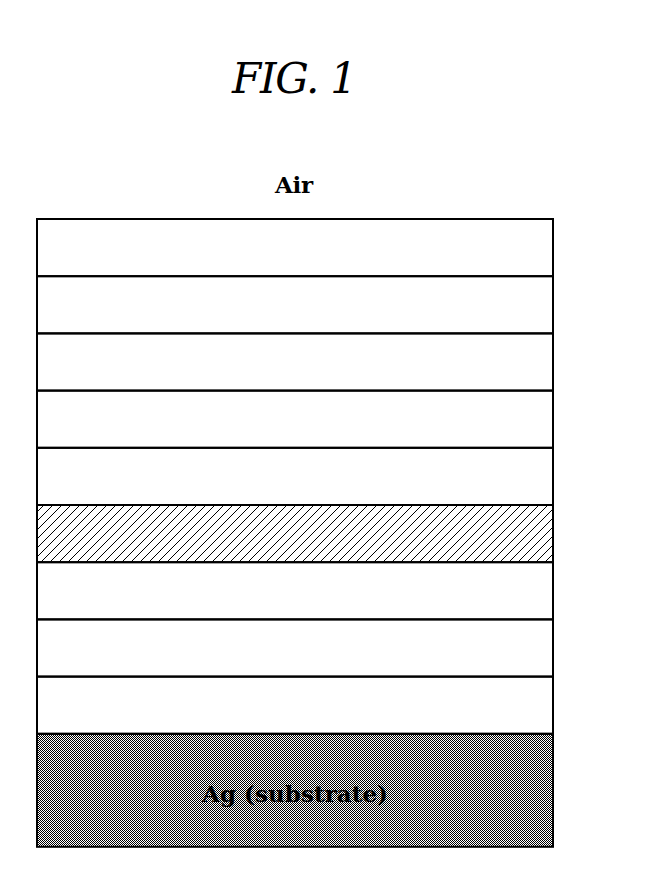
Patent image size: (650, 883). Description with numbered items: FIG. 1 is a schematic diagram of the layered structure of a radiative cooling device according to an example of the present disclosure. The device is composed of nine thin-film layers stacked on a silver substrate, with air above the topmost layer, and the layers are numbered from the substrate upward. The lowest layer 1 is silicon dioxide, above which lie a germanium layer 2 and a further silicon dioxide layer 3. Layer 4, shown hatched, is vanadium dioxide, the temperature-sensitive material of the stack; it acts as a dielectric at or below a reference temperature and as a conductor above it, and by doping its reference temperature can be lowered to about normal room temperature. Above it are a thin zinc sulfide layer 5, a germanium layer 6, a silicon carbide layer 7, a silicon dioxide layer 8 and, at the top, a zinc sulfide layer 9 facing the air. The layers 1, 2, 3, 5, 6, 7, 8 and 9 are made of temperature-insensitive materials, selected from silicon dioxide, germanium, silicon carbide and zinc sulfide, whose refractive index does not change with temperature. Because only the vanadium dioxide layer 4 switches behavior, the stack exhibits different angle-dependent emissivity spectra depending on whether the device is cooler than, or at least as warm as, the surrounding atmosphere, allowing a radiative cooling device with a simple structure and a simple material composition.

The ZnS layer (567 nm) 9 is at (295, 247).
The SiO2 layer (318 nm) 8 is at (295, 304).
The SiC layer (592 nm) 7 is at (295, 361).
The Ge layer (229 nm) 6 is at (295, 419).
The ZnS layer (73 nm) 5 is at (295, 476).
The VO2 layer (166 nm) 4 is at (295, 533).
The SiO2 layer (846 nm) 3 is at (295, 590).
The Ge layer (790 nm) 2 is at (295, 647).
The SiO2 layer (807 nm) 1 is at (295, 705).